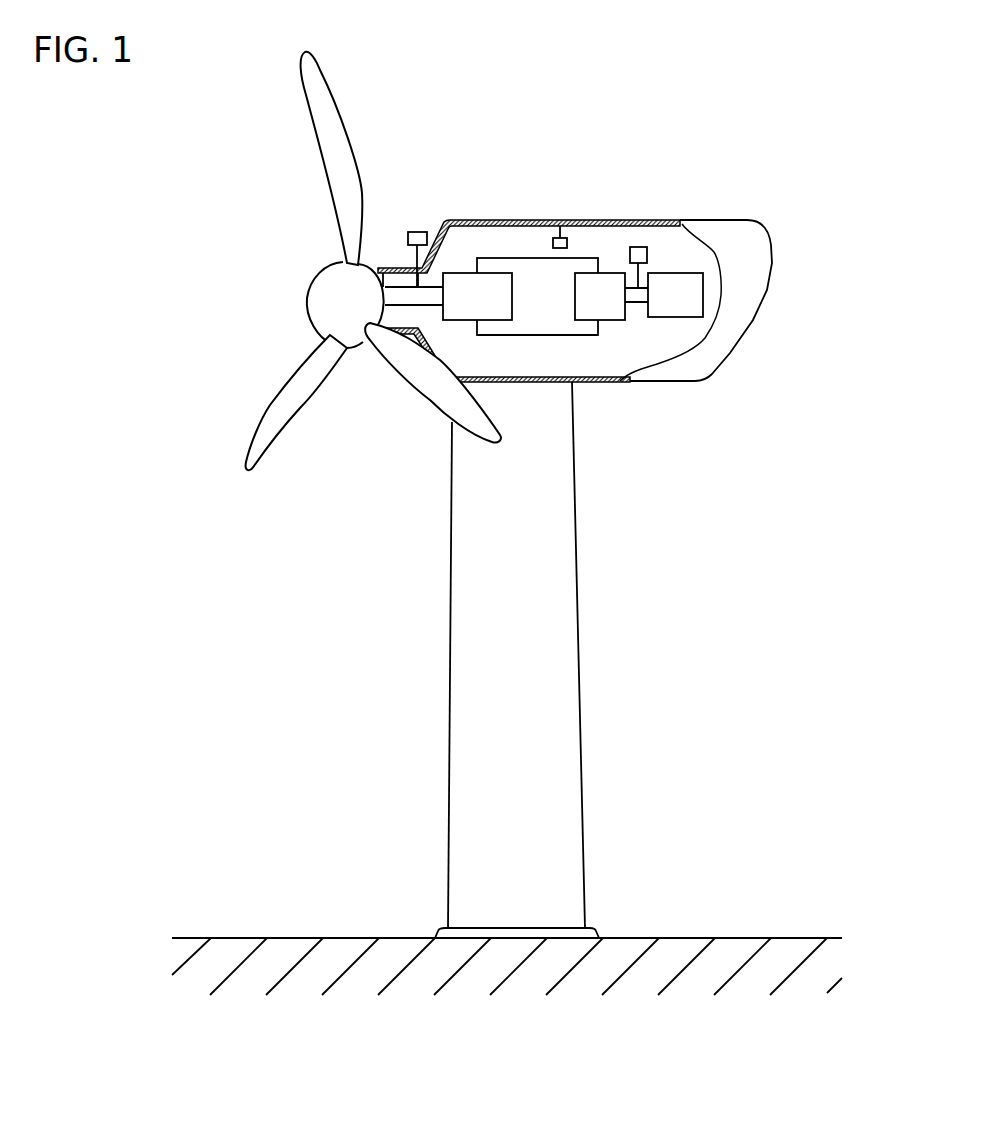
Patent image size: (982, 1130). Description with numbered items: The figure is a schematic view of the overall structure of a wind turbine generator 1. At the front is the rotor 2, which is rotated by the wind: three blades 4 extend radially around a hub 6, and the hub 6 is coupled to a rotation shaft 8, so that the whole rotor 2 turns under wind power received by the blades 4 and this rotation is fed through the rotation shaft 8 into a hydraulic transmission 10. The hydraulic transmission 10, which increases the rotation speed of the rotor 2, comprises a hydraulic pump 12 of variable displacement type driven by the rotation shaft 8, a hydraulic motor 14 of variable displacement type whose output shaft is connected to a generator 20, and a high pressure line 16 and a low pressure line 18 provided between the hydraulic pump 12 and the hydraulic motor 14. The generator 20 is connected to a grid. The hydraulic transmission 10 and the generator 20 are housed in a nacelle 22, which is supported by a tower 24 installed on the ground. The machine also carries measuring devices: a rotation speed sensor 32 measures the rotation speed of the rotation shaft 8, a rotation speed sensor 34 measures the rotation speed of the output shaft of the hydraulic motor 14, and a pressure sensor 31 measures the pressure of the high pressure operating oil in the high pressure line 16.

The wind turbine generator 1 is at (758, 107).
The rotor 2 is at (338, 261).
The blade 4 is at (338, 157).
The hub 6 is at (325, 297).
The rotation shaft 8 is at (400, 277).
The hydraulic transmission 10 is at (609, 322).
The hydraulic pump 12 is at (460, 273).
The hydraulic motor 14 is at (604, 273).
The high pressure line 16 is at (527, 258).
The low pressure line 18 is at (542, 335).
The generator 20 is at (683, 273).
The nacelle 22 is at (772, 252).
The tower 24 is at (542, 517).
The pressure sensor 31 is at (562, 238).
The rotation speed sensor 32 is at (417, 232).
The rotation speed sensor 34 is at (641, 247).